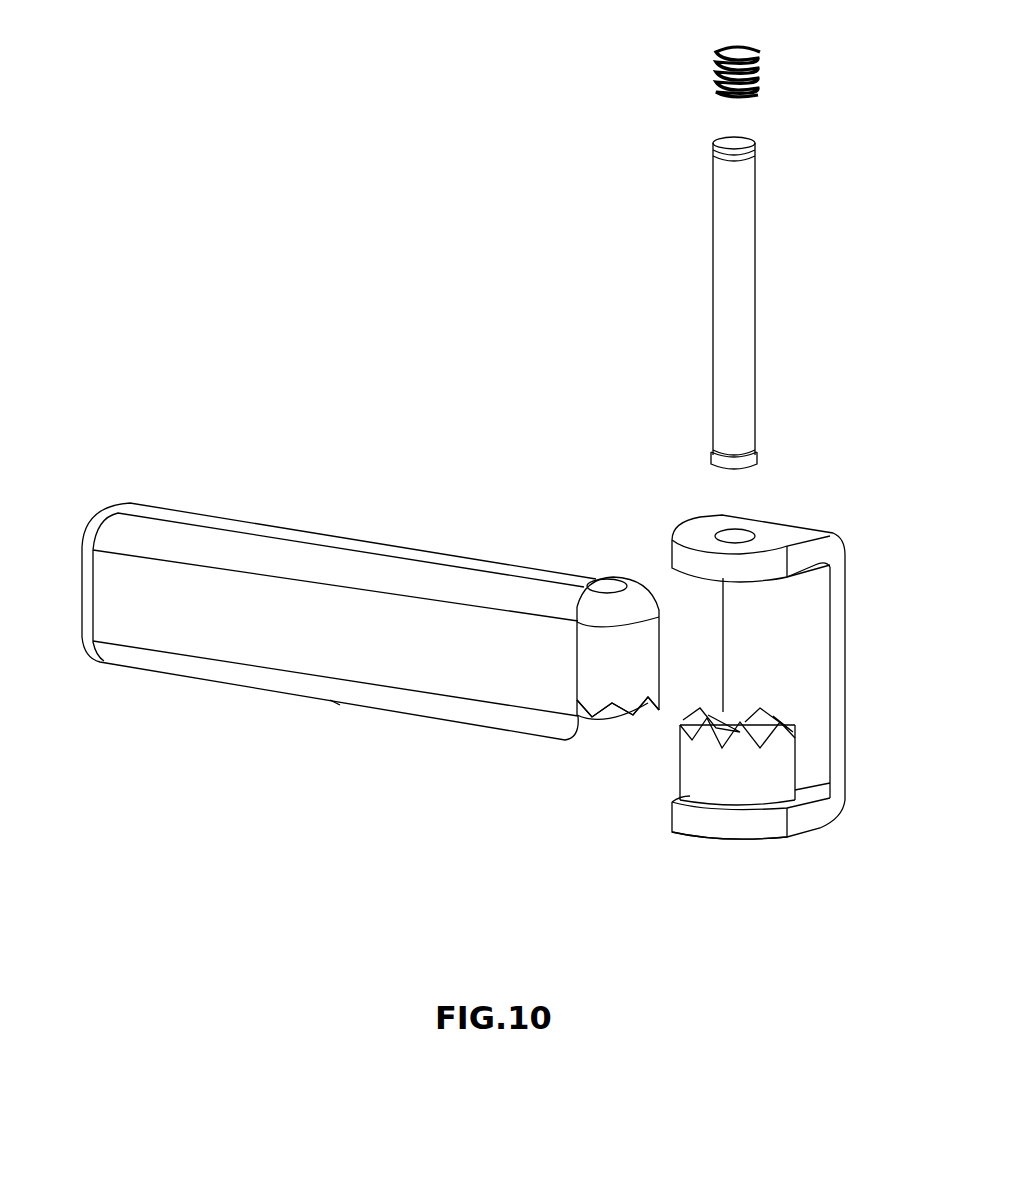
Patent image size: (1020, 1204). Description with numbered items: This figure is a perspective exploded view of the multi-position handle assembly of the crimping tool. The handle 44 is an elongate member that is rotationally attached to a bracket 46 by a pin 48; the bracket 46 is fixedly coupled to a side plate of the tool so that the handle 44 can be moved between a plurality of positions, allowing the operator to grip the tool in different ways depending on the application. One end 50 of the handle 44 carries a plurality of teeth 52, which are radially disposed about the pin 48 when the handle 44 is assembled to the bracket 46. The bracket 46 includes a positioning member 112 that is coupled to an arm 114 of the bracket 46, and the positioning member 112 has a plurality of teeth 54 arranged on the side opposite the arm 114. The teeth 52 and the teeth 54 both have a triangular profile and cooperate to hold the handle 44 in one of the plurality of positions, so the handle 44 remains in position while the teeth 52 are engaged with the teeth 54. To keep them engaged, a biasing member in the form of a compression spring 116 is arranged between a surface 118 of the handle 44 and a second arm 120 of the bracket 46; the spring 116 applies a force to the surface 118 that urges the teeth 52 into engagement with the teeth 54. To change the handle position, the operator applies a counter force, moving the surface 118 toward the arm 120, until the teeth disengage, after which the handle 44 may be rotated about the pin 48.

The handle 44 is at (218, 522).
The bracket 46 is at (845, 684).
The pin 48 is at (756, 300).
The end 50 is at (335, 642).
The teeth 52 is at (622, 733).
The teeth 54 is at (713, 706).
The positioning member 112 is at (697, 772).
The arm 114 is at (730, 838).
The compression spring 116 is at (762, 72).
The surface 118 is at (597, 578).
The arm 120 is at (690, 523).